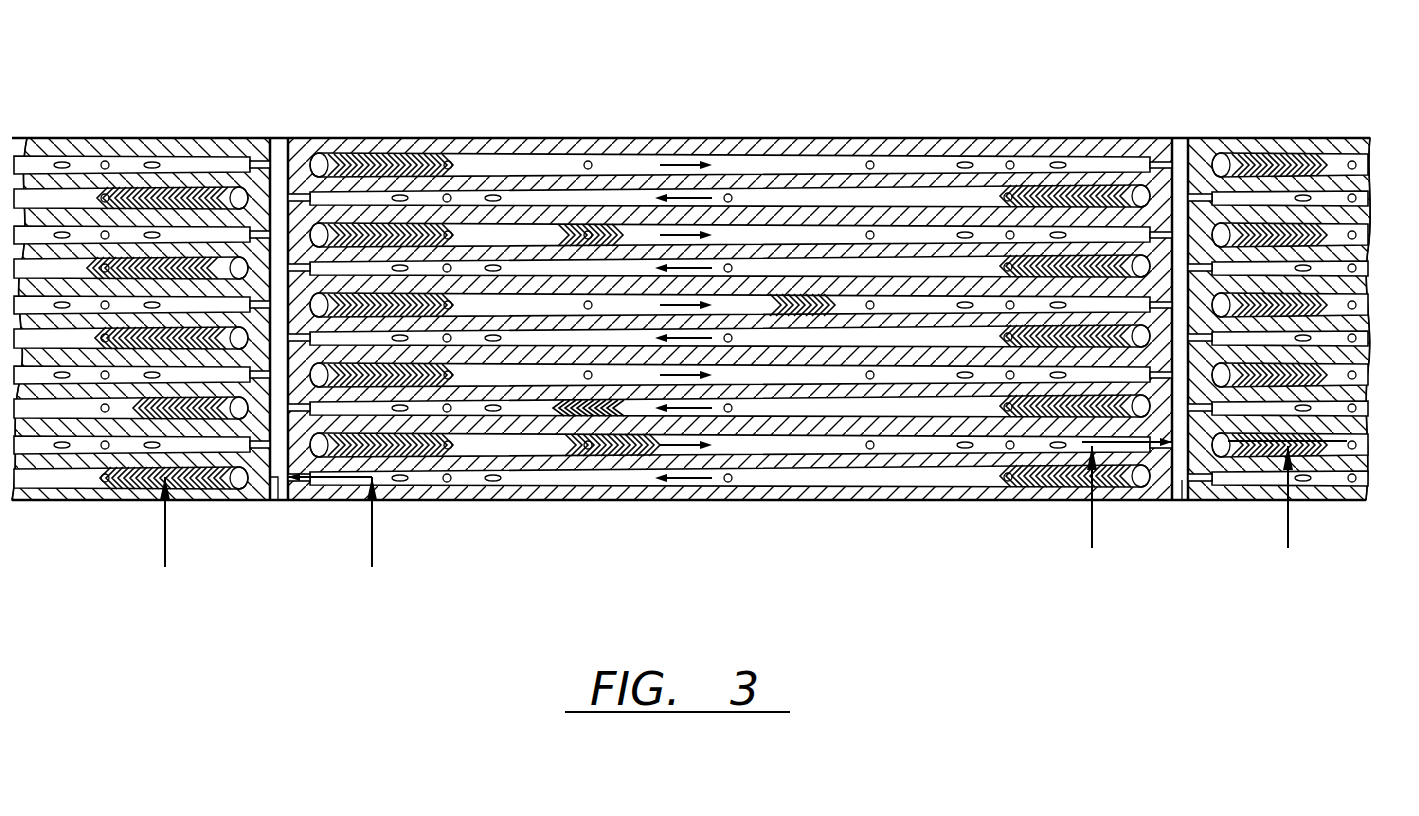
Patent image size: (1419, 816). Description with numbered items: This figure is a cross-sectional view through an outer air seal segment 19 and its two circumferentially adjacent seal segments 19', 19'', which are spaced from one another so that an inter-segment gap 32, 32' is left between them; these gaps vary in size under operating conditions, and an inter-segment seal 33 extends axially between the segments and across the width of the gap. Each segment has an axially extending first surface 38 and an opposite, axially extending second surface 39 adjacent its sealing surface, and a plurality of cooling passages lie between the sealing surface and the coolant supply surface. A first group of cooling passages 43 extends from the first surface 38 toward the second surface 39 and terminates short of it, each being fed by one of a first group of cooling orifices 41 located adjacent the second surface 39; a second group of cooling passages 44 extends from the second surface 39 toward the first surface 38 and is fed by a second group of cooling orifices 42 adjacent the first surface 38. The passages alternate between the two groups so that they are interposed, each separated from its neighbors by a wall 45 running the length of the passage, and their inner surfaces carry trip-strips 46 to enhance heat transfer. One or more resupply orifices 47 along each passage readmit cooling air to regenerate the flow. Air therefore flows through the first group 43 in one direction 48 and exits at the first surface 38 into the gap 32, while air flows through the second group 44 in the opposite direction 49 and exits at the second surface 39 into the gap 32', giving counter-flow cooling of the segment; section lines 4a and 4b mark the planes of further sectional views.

The outer air seal segment 19 is at (730, 290).
The adjacent seal segment 19' is at (141, 287).
The adjacent seal segment 19'' is at (1283, 274).
The inter-segment gap 32 is at (315, 289).
The inter-segment gap 32' is at (1207, 360).
The inter-segment seal 33 is at (275, 500).
The first surface 38 is at (272, 138).
The second surface 39 is at (1188, 166).
The first group of cooling orifices 41 is at (232, 262).
The second group of cooling orifices 42 is at (352, 300).
The first group of cooling passages 43 is at (551, 240).
The second group of cooling passages 44 is at (828, 240).
The wall 45 is at (1005, 245).
The trip-strips 46 is at (124, 192).
The resupply orifice 47 is at (105, 481).
The first flow direction 48 is at (725, 192).
The second flow direction 49 is at (676, 160).
The section line 4a is at (285, 524).
The section line 4b is at (1214, 496).